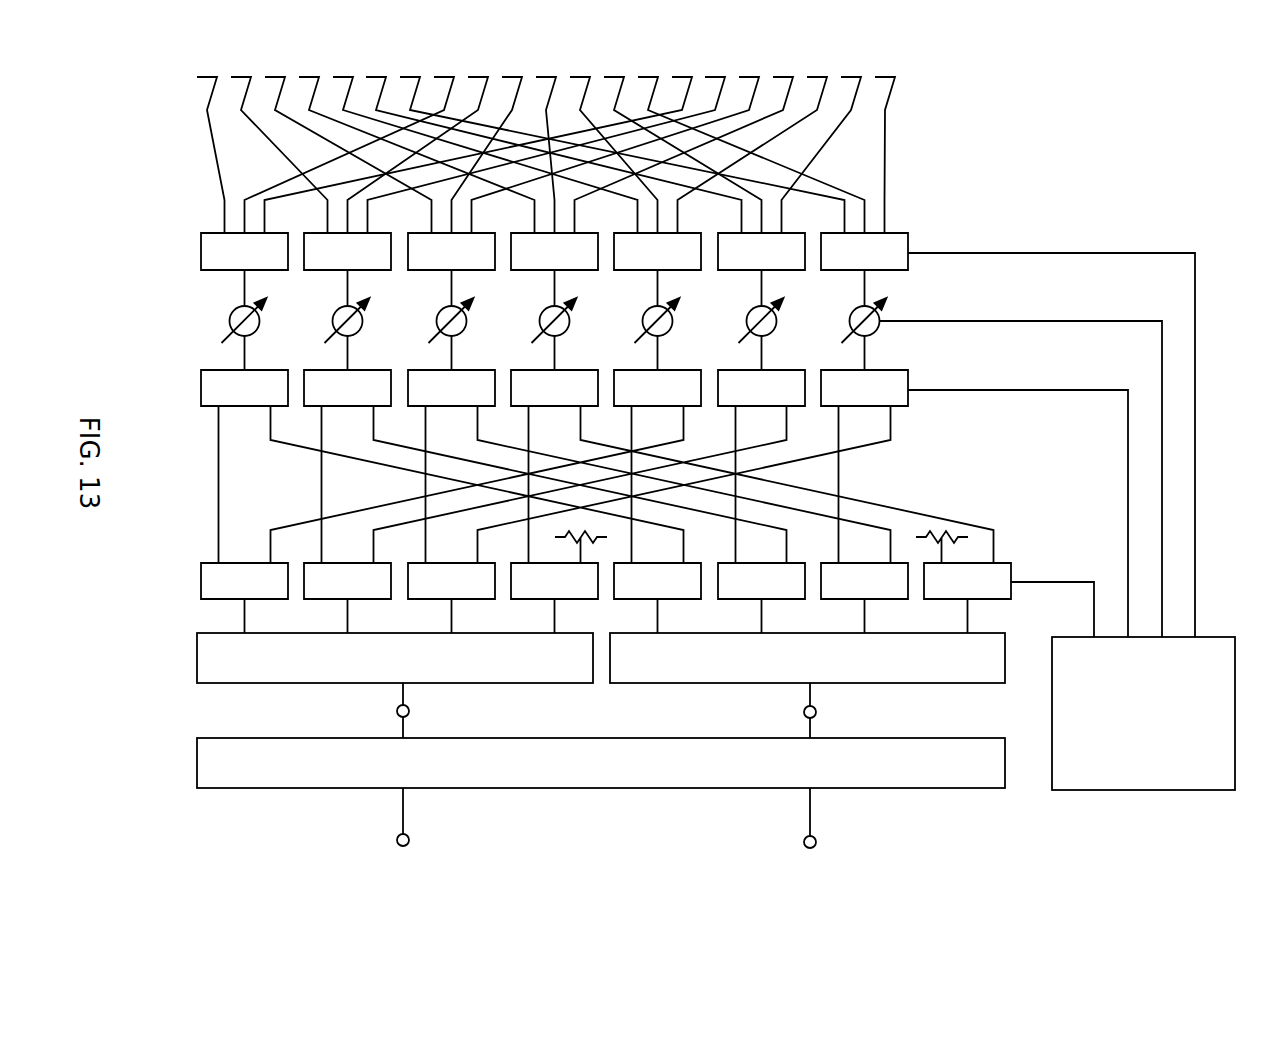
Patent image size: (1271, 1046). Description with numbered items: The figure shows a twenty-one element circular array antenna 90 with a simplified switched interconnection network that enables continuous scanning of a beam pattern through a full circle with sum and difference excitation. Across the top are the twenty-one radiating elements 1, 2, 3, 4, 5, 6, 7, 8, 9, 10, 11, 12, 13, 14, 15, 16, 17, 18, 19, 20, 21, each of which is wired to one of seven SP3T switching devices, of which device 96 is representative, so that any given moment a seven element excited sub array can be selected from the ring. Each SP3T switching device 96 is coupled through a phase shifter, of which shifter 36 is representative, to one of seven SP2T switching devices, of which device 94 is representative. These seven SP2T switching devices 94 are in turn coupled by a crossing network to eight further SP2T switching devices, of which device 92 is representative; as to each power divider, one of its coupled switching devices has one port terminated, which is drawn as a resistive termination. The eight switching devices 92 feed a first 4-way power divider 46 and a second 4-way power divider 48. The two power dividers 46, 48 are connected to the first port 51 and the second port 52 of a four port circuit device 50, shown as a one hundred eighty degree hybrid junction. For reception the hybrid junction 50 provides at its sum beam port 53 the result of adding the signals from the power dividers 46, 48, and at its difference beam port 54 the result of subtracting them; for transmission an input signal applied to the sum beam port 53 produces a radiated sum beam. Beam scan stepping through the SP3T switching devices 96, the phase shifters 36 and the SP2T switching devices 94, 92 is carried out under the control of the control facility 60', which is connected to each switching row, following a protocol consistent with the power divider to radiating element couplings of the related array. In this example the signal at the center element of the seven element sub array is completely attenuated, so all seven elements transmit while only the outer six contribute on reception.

The radiating element 1 is at (211, 143).
The radiating element 2 is at (279, 143).
The radiating element 3 is at (348, 143).
The radiating element 4 is at (417, 143).
The radiating element 5 is at (485, 143).
The radiating element 6 is at (554, 143).
The radiating element 7 is at (622, 143).
The radiating element 8 is at (350, 143).
The radiating element 9 is at (418, 143).
The radiating element 10 is at (487, 143).
The radiating element 11 is at (546, 143).
The radiating element 12 is at (613, 143).
The radiating element 13 is at (682, 143).
The radiating element 14 is at (750, 143).
The radiating element 15 is at (479, 143).
The radiating element 16 is at (547, 143).
The radiating element 17 is at (616, 143).
The radiating element 18 is at (684, 143).
The radiating element 19 is at (753, 143).
The radiating element 20 is at (822, 143).
The radiating element 21 is at (885, 143).
The phase shifter 36 is at (230, 319).
The first 4-way power divider 46 is at (197, 657).
The second 4-way power divider 48 is at (1005, 683).
The four port circuit device 50 is at (197, 759).
The first port 51 is at (409, 710).
The second port 52 is at (804, 713).
The sum beam port 53 is at (409, 838).
The difference beam port 54 is at (804, 840).
The control facility 60' is at (1143, 744).
The array antenna 90 is at (995, 190).
The SP2T switching device 92 is at (197, 581).
The SP2T switching device 94 is at (201, 387).
The SP3T switching device 96 is at (201, 251).